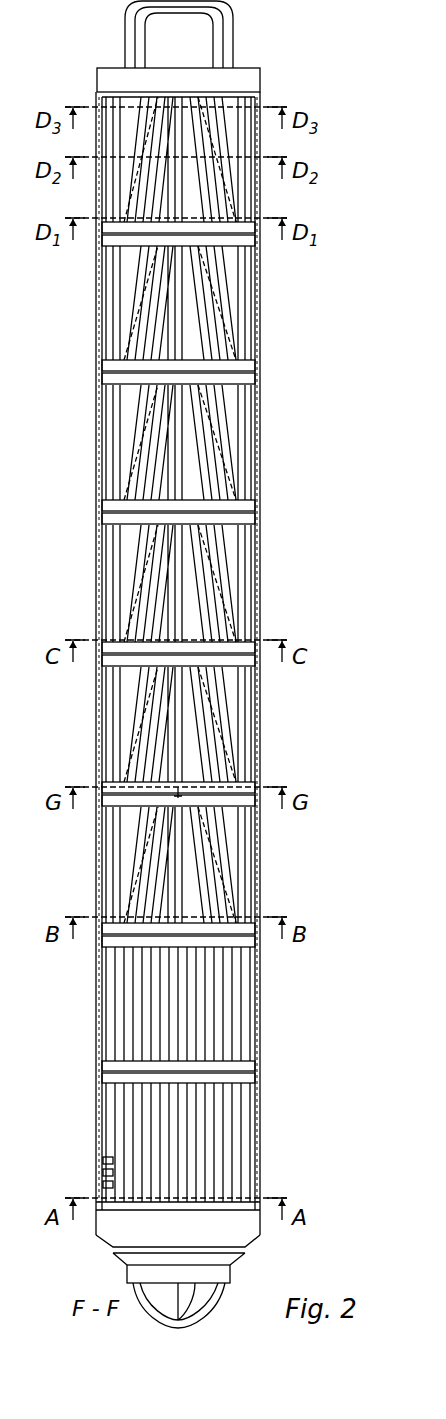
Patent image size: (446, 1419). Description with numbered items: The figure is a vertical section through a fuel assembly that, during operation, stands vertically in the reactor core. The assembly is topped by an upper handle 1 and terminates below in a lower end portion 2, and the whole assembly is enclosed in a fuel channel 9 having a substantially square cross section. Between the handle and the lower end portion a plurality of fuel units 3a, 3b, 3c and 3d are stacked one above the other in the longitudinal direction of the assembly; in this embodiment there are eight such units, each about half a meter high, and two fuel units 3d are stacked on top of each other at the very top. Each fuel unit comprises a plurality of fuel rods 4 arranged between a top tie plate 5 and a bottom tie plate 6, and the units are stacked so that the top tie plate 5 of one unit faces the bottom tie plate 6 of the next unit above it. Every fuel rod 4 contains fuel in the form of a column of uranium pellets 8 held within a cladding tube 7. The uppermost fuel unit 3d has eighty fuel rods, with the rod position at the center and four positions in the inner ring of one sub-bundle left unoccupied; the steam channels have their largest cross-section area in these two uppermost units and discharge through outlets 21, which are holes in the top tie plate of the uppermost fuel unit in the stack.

The upper handle 1 is at (128, 38).
The outlets 21 is at (208, 97).
The lower end portion 2 is at (130, 1273).
The fuel unit 3a is at (255, 1123).
The fuel unit 3b is at (255, 838).
The fuel unit 3c is at (255, 557).
The fuel unit 3d is at (255, 299).
The fuel rods 4 is at (150, 1013).
The top tie plate 5 is at (102, 1077).
The bottom tie plate 6 is at (102, 1064).
The cladding tube 7 is at (107, 1133).
The uranium pellets 8 is at (104, 1184).
The fuel channel 9 is at (258, 988).